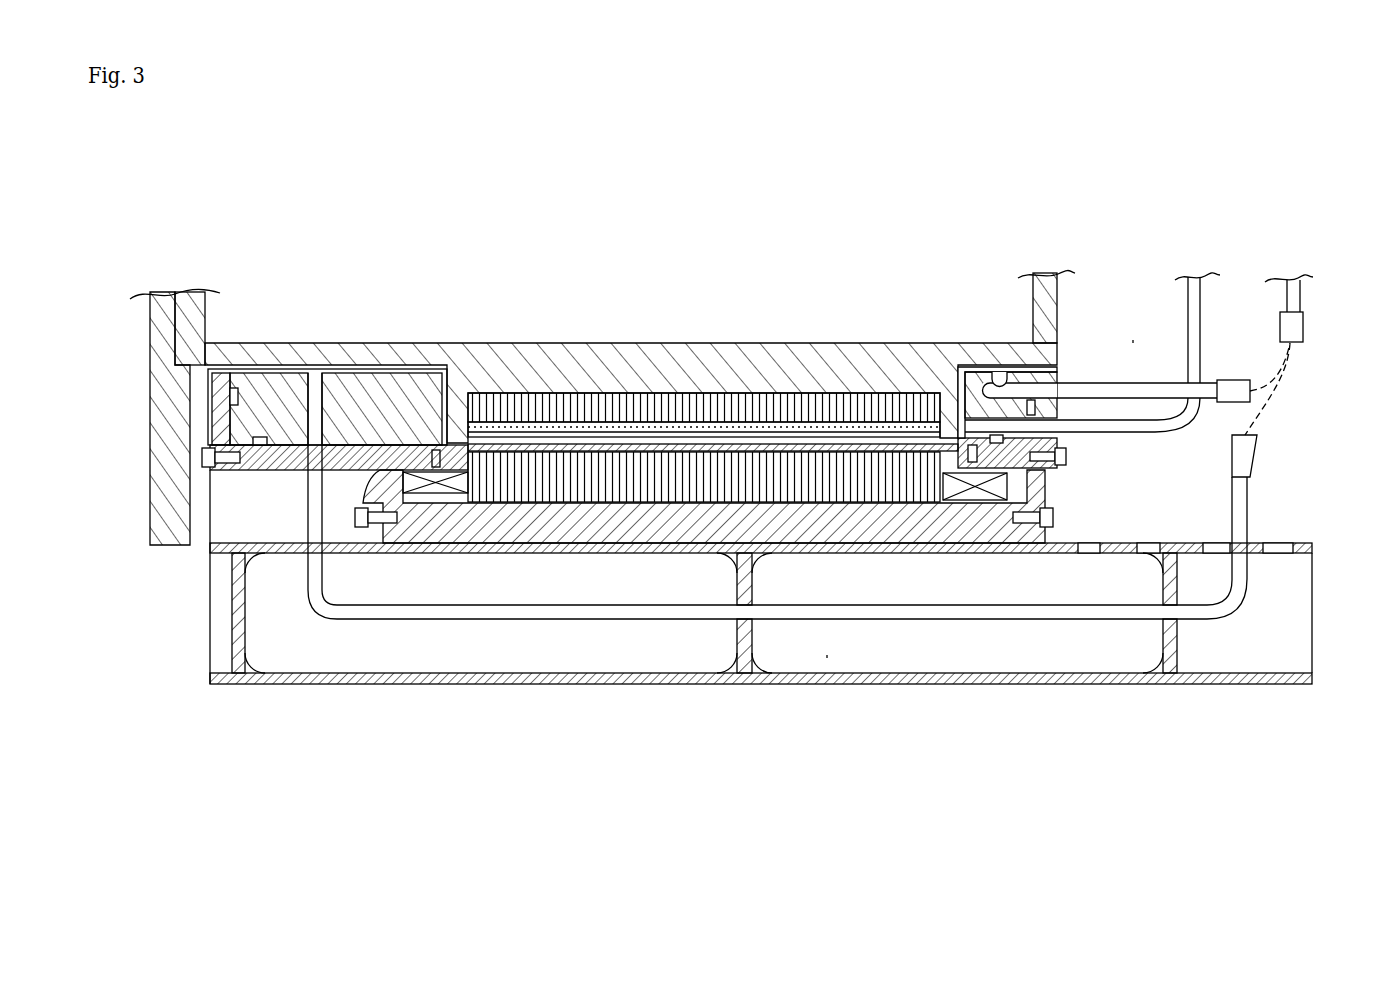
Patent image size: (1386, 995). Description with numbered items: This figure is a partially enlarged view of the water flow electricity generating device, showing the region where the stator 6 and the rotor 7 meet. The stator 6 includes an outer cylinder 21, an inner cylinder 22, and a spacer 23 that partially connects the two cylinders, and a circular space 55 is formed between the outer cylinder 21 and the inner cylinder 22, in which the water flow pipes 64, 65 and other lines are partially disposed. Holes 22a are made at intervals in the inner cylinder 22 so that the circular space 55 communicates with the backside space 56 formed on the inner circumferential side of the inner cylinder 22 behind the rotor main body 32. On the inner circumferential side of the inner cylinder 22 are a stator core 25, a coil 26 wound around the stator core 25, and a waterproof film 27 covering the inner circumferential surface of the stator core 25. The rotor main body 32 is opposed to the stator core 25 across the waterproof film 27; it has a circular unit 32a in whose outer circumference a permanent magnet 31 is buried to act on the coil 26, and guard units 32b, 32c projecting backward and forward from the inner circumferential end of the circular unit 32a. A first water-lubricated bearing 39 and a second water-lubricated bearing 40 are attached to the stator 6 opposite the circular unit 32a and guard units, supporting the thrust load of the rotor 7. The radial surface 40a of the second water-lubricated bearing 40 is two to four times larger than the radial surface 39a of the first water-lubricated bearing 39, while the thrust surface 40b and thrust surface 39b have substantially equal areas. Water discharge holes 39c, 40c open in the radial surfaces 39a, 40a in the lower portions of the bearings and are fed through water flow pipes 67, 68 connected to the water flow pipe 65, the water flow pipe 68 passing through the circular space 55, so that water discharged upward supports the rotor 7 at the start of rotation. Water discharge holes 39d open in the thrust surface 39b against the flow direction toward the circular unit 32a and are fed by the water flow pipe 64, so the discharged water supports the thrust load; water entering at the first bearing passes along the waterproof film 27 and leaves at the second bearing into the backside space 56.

The stator 6 is at (761, 644).
The rotor 7 is at (222, 341).
The outer cylinder 21 is at (668, 684).
The inner cylinder 22 is at (761, 619).
The holes 22a is at (1087, 543).
The spacer 23 is at (752, 650).
The stator core 25 is at (704, 618).
The coil 26 is at (457, 500).
The waterproof film 27 is at (680, 447).
The permanent magnet 31 is at (740, 423).
The rotor main body 32 is at (640, 307).
The circular unit 32a is at (806, 393).
The guard unit 32b is at (978, 343).
The guard unit 32c is at (377, 343).
The first water-lubricated bearing 39 is at (1046, 322).
The radial surface 39a is at (1018, 372).
The thrust surface 39b is at (960, 392).
The water discharge hole 39c is at (1000, 372).
The water discharge hole 39d is at (960, 430).
The second water-lubricated bearing 40 is at (366, 427).
The radial surface 40a is at (258, 370).
The thrust surface 40b is at (455, 390).
The water discharge hole 40c is at (314, 373).
The circular space 55 is at (827, 655).
The backside space 56 is at (1133, 340).
The water flow pipe 64 is at (1200, 323).
The water flow pipe 65 is at (1303, 297).
The water flow pipe 67 is at (1130, 397).
The water flow pipe 68 is at (1005, 619).